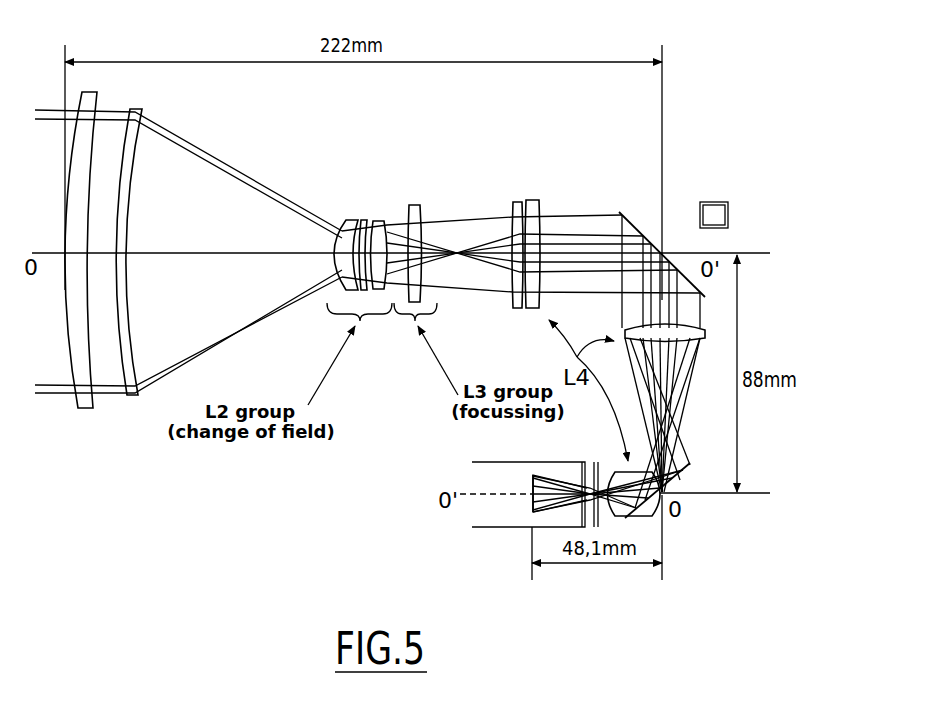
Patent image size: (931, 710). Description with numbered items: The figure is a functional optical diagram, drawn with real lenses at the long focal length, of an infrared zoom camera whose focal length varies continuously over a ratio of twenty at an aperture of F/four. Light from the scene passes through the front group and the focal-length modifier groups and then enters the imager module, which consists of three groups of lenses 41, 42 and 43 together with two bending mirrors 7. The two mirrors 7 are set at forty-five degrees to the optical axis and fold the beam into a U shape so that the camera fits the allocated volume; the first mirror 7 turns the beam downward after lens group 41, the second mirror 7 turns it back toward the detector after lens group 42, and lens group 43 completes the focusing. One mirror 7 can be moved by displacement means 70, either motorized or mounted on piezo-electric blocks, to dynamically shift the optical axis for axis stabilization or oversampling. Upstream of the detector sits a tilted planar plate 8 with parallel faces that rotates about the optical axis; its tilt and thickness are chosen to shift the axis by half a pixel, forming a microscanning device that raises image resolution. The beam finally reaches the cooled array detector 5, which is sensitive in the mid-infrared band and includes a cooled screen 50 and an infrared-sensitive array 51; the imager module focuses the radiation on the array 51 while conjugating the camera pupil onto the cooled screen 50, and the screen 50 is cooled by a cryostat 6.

The lens group 41 is at (531, 197).
The lens group 42 is at (705, 339).
The lens group 43 is at (621, 468).
The bending mirror 7 is at (633, 224).
The displacement means 70 is at (653, 242).
The cooled screen 50 is at (582, 462).
The array 51 is at (530, 485).
The array detector 5 is at (526, 506).
The cryostat 6 is at (492, 510).
The tilted planar plate 8 is at (597, 518).